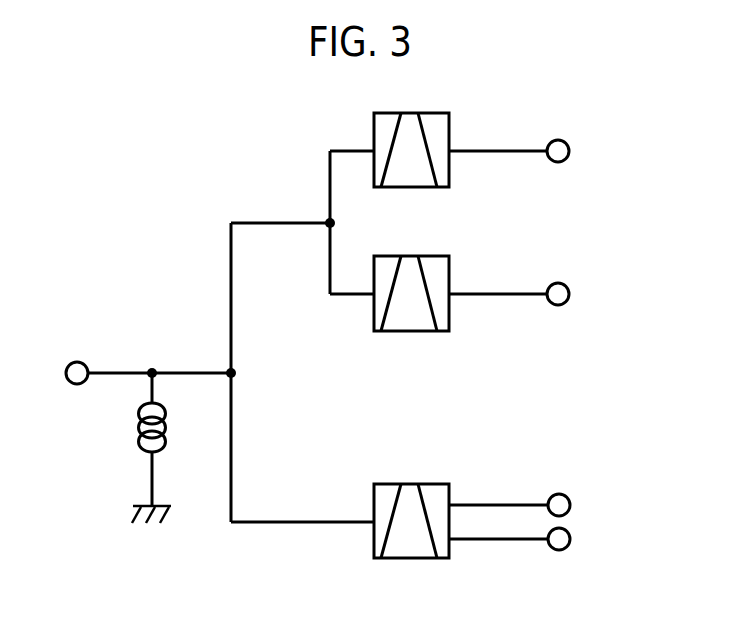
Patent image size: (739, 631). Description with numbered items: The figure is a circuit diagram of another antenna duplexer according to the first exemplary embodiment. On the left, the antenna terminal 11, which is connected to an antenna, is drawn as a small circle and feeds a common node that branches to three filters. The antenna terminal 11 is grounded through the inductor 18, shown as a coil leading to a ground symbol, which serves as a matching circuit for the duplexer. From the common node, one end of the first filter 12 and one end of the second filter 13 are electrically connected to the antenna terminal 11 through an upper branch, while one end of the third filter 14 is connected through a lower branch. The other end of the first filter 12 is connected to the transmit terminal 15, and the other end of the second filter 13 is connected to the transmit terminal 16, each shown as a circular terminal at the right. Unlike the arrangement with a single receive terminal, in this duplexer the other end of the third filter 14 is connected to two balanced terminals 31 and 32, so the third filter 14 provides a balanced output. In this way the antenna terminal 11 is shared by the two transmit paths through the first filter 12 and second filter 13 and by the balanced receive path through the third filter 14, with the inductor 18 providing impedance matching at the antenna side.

The antenna terminal 11 is at (67, 363).
The first filter 12 is at (449, 163).
The second filter 13 is at (449, 310).
The third filter 14 is at (449, 551).
The transmit terminal 15 is at (569, 156).
The transmit terminal 16 is at (569, 300).
The inductor 18 is at (128, 442).
The balanced terminal 31 is at (570, 510).
The balanced terminal 32 is at (570, 544).